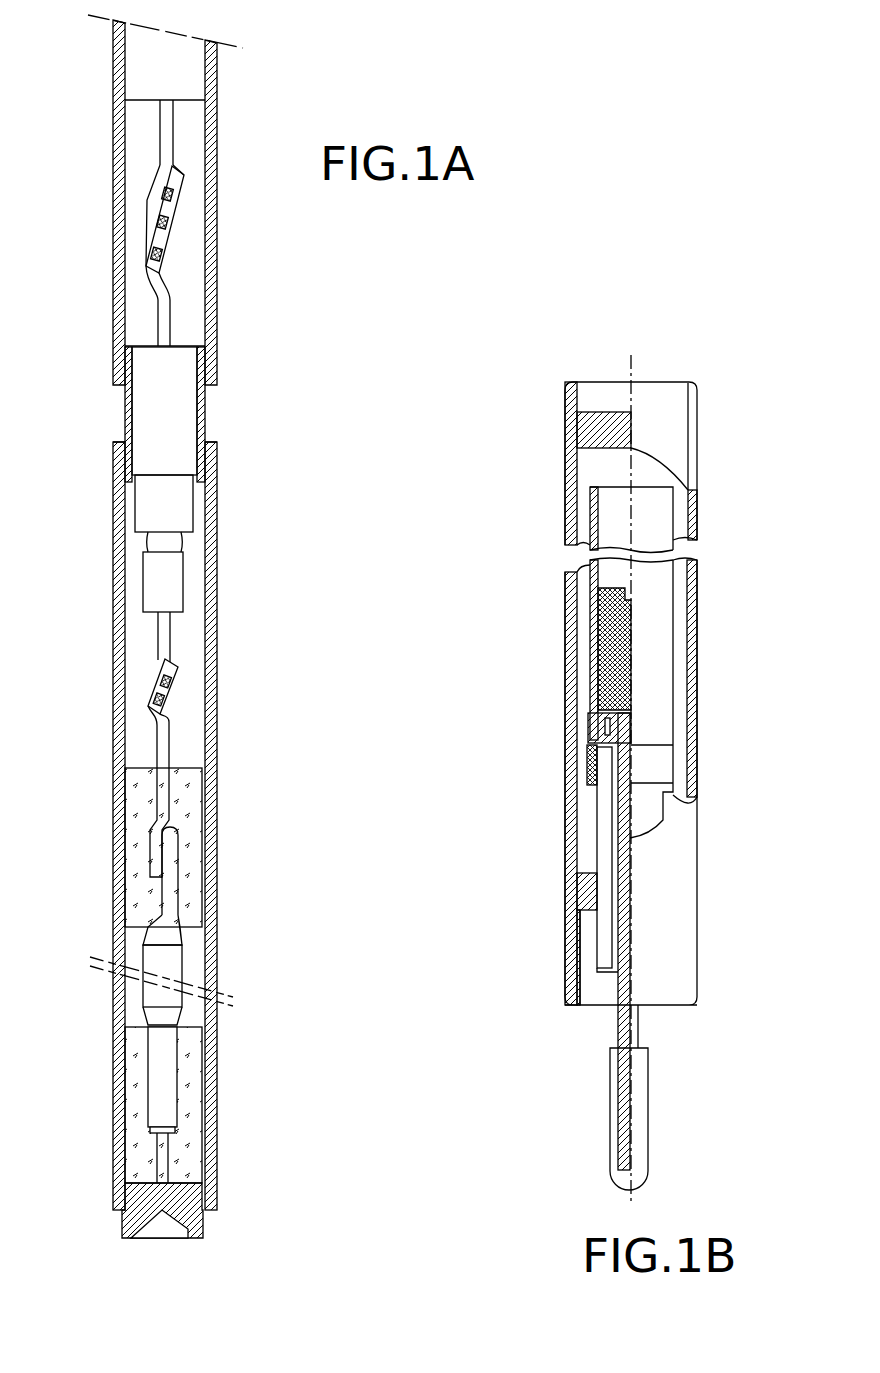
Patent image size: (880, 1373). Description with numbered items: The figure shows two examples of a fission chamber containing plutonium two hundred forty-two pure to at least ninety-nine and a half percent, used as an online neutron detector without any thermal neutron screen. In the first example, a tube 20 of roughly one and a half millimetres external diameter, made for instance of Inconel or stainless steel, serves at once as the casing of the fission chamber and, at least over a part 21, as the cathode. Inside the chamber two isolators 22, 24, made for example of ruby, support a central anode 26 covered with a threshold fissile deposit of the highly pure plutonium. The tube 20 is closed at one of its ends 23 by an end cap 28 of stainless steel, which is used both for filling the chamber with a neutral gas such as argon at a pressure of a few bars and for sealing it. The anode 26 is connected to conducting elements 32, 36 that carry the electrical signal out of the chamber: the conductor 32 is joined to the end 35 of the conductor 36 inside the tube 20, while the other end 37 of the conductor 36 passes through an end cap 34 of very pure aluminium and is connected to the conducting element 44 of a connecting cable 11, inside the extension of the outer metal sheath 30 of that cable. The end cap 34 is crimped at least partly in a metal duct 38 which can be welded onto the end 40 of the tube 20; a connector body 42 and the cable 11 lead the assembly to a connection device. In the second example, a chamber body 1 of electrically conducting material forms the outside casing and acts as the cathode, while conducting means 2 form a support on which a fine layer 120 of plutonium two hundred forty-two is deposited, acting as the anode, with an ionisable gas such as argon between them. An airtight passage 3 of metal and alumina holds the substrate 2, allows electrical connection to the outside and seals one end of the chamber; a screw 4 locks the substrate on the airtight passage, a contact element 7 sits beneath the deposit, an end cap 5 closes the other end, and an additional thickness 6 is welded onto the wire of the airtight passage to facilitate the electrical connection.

In FIG. 1A, the connecting cable 11 is at (224, 82).
In FIG. 1A, the conducting element 44 is at (168, 142).
In FIG. 1A, the outer metal sheath 30 is at (113, 207).
In FIG. 1A, the other end of conductor 37 is at (181, 185).
In FIG. 1A, the conducting element 36 is at (163, 308).
In FIG. 1A, the metal duct 38 is at (217, 355).
In FIG. 1A, the connector body 42 is at (208, 383).
In FIG. 1A, the end of tube 40 is at (112, 444).
In FIG. 1A, the end cap 34 is at (126, 505).
In FIG. 1A, the tube 20 is at (118, 576).
In FIG. 1A, the end of conductor 35 is at (165, 633).
In FIG. 1A, the conducting element 32 is at (163, 743).
In FIG. 1A, the isolator 24 is at (188, 785).
In FIG. 1A, the central anode 26 is at (163, 957).
In FIG. 1A, the part of tube 21 is at (123, 993).
In FIG. 1A, the isolator 22 is at (185, 1097).
In FIG. 1A, the end of tube 23 is at (220, 1178).
In FIG. 1A, the end cap 28 is at (127, 1193).
In FIG. 1B, the end cap 5 is at (583, 427).
In FIG. 1B, the means forming a support 2 is at (612, 528).
In FIG. 1B, the screw 4 is at (598, 615).
In FIG. 1B, the fine layer of radioelement 120 is at (598, 680).
In FIG. 1B, the contact element 7 is at (585, 757).
In FIG. 1B, the chamber body 1 is at (568, 835).
In FIG. 1B, the airtight passage 3 is at (606, 937).
In FIG. 1B, the additional thickness 6 is at (615, 1080).